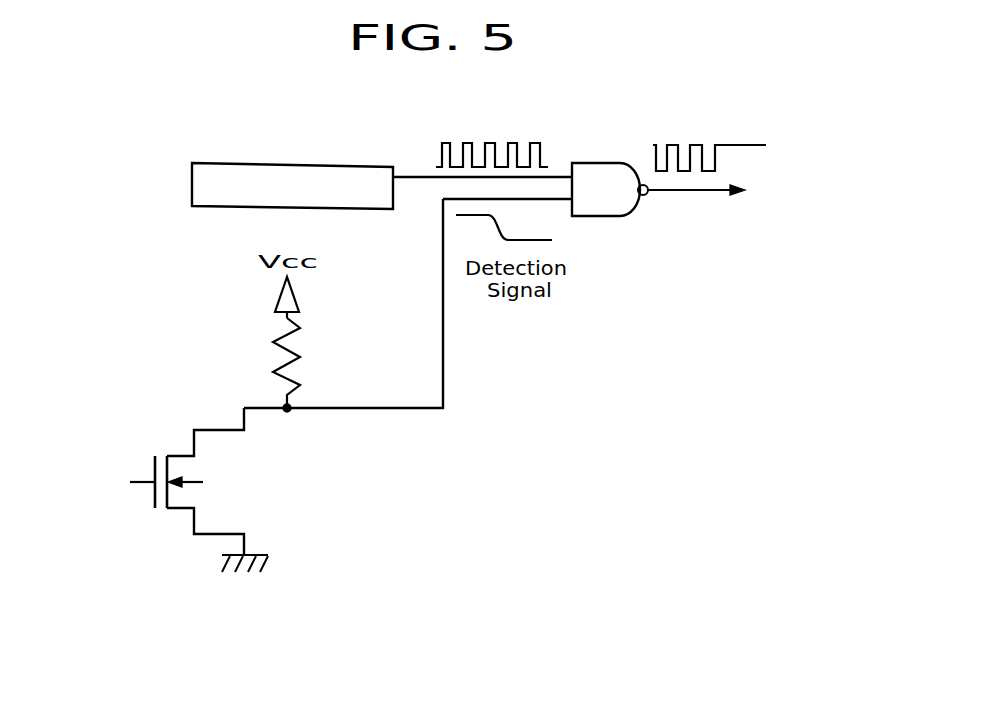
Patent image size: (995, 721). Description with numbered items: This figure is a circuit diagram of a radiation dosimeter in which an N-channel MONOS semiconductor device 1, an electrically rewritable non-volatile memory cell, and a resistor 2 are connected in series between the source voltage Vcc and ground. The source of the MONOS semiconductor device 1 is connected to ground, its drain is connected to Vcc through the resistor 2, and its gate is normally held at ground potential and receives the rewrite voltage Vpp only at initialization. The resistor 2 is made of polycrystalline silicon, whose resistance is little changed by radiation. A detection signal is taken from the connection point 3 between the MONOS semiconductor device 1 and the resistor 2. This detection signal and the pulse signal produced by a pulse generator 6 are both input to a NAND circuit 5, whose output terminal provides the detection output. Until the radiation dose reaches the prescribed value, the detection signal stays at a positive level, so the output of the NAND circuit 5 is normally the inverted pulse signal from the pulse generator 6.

The MONOS semiconductor device 1 is at (138, 459).
The resistor 2 is at (310, 330).
The connection point 3 is at (288, 411).
The NAND circuit 5 is at (593, 163).
The pulse generator 6 is at (323, 163).